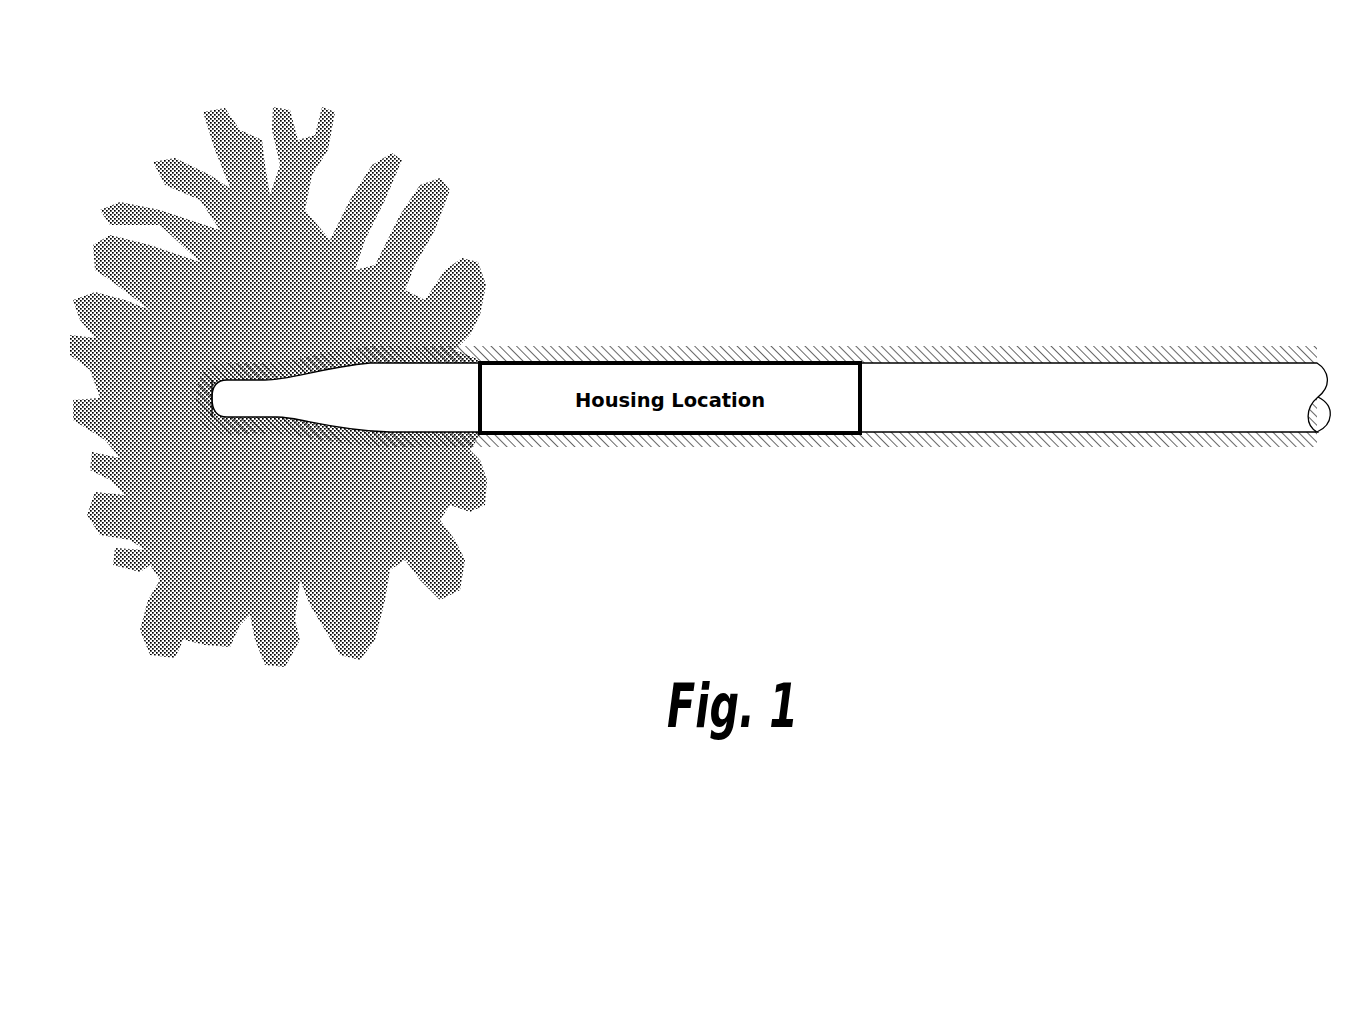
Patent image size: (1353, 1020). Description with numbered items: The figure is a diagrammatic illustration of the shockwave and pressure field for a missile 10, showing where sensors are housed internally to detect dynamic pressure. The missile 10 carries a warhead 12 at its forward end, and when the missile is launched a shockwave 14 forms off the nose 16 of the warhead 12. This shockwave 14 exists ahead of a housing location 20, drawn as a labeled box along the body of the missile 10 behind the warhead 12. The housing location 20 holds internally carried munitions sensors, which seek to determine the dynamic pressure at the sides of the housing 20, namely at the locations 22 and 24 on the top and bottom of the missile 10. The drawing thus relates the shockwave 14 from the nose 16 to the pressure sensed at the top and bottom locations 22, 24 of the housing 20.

The missile 10 is at (1022, 354).
The warhead 12 is at (370, 358).
The shockwave 14 is at (415, 477).
The nose 16 is at (233, 400).
The housing location 20 is at (780, 412).
The location 22 is at (669, 437).
The location 24 is at (686, 362).